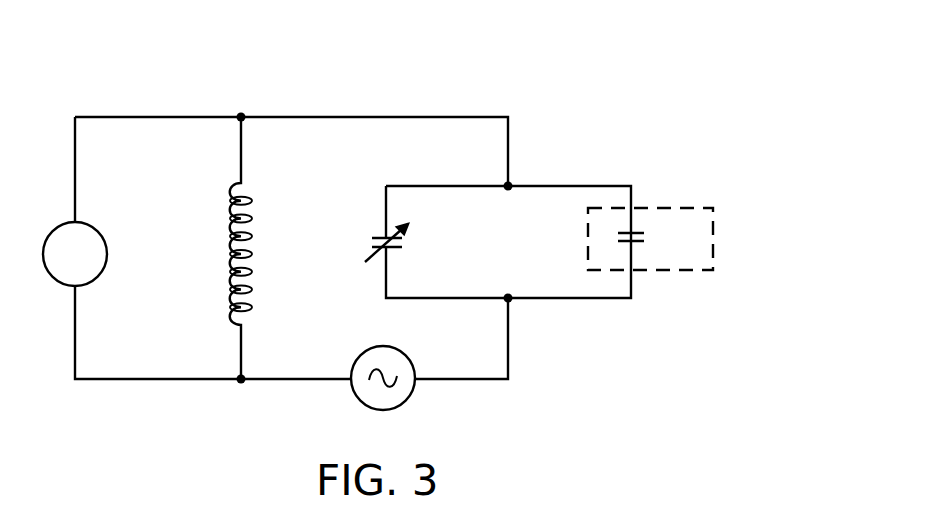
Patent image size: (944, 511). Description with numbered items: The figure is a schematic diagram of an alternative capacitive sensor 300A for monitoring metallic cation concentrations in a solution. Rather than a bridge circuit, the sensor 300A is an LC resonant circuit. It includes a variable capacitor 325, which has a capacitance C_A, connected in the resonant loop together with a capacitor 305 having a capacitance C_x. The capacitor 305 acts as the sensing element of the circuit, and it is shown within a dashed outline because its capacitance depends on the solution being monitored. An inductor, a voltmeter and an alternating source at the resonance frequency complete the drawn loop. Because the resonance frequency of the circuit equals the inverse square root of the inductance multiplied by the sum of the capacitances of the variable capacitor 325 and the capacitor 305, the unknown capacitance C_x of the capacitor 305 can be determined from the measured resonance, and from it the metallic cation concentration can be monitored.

The sensor 300A is at (419, 230).
The variable capacitor 325 is at (380, 237).
The capacitor 305 is at (715, 238).